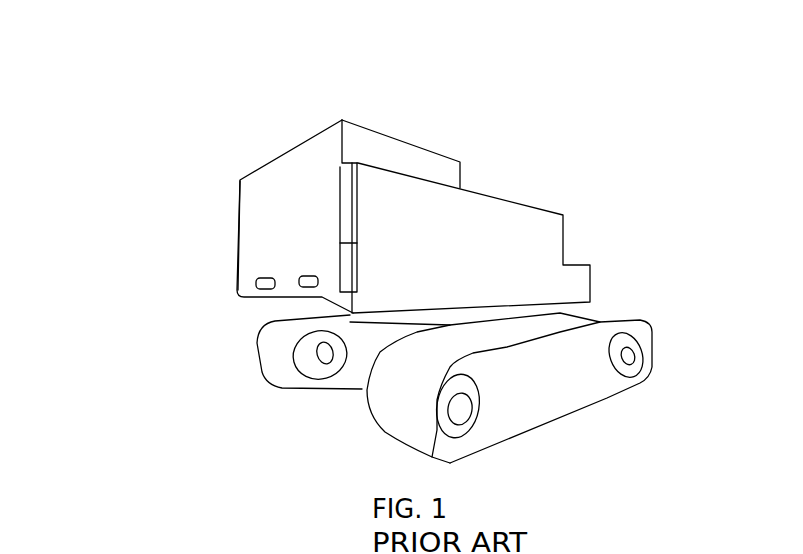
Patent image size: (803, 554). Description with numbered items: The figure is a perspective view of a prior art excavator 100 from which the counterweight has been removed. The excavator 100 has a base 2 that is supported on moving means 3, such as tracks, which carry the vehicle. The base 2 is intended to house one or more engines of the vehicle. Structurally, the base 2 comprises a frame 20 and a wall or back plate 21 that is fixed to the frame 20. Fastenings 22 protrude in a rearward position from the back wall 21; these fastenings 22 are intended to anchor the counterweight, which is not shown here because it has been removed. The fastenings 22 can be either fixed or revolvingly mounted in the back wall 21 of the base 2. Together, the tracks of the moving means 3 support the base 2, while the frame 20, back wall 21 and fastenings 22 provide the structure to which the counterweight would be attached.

The excavator 100 is at (212, 172).
The base 2 is at (540, 233).
The frame 20 is at (348, 192).
The wall or back plate 21 is at (297, 260).
The fastenings 22 is at (257, 284).
The moving means 3 is at (410, 407).